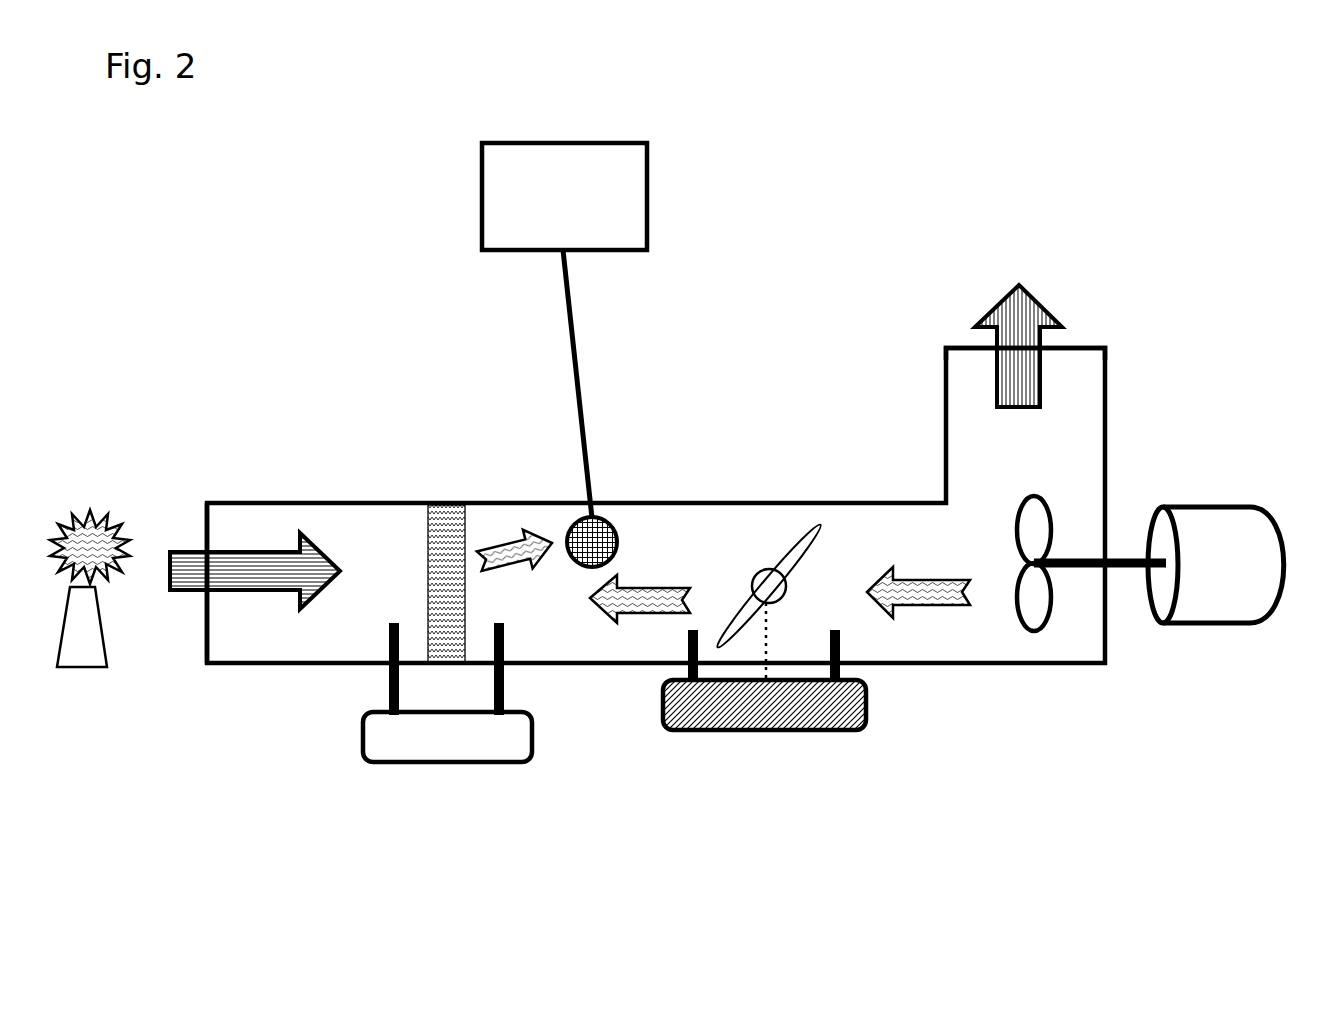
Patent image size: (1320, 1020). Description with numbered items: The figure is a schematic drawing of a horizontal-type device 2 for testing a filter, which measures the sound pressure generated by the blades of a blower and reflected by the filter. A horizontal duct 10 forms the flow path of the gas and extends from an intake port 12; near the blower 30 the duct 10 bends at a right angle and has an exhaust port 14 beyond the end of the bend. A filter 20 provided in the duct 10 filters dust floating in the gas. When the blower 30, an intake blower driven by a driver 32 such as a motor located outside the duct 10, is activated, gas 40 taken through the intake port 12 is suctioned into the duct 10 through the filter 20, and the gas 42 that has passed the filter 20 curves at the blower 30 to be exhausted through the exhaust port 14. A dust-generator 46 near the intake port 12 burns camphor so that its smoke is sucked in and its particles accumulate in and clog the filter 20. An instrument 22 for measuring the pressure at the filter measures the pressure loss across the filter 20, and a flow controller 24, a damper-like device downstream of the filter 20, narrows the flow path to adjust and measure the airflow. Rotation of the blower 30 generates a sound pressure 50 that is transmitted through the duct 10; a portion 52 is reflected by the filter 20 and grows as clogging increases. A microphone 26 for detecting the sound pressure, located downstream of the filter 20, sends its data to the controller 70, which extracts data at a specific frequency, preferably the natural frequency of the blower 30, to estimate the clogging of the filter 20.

The horizontal-type device for testing a filter 2 is at (1080, 119).
The duct 10 is at (685, 502).
The intake port 12 is at (206, 520).
The exhaust port 14 is at (966, 340).
The filter 20 is at (444, 515).
The instrument for measuring the pressure at the filter 22 is at (428, 737).
The flow controller 24 is at (753, 735).
The microphone for detecting the sound pressure 26 is at (610, 518).
The blower 30 is at (1034, 635).
The driver 32 is at (1218, 598).
The gas 40 is at (235, 592).
The gas 42 is at (1045, 308).
The dust-generator 46 is at (80, 518).
The sound pressure 50 is at (640, 618).
The reflected sound pressure 52 is at (513, 530).
The controller 70 is at (567, 143).